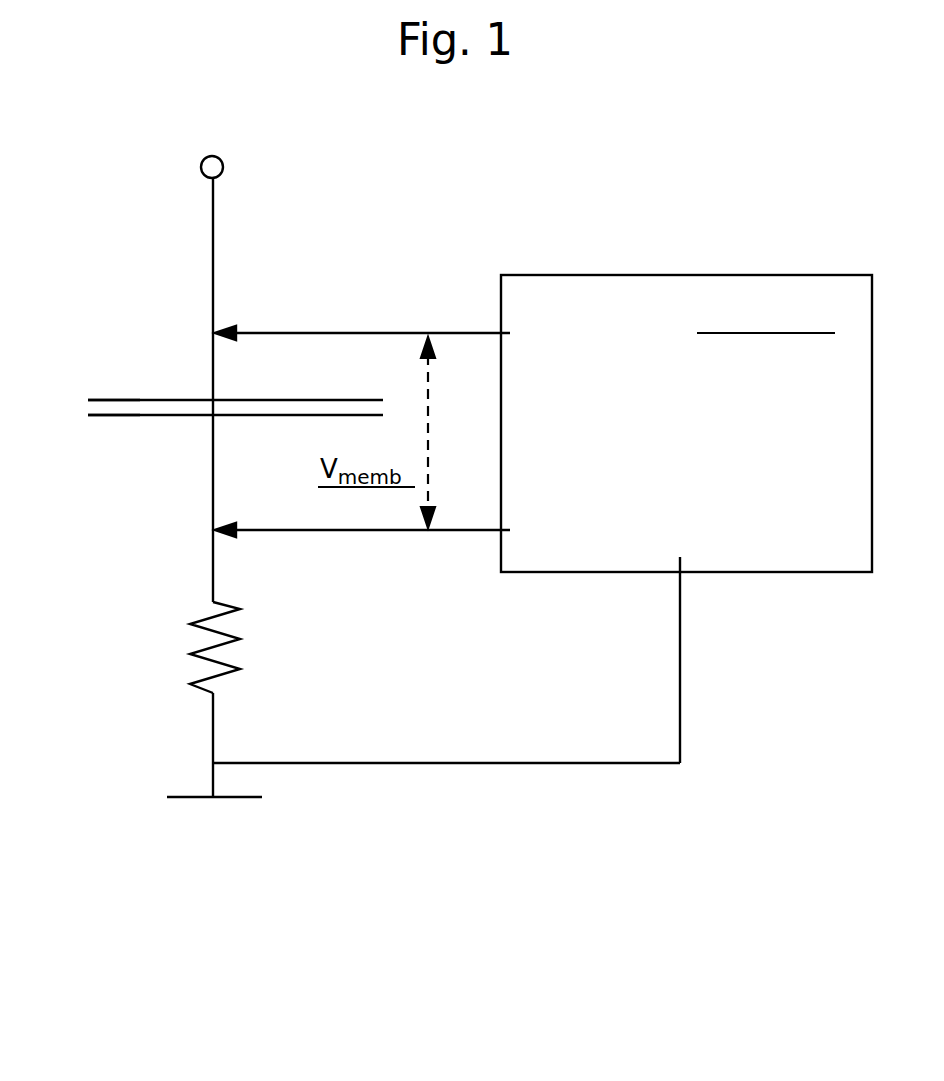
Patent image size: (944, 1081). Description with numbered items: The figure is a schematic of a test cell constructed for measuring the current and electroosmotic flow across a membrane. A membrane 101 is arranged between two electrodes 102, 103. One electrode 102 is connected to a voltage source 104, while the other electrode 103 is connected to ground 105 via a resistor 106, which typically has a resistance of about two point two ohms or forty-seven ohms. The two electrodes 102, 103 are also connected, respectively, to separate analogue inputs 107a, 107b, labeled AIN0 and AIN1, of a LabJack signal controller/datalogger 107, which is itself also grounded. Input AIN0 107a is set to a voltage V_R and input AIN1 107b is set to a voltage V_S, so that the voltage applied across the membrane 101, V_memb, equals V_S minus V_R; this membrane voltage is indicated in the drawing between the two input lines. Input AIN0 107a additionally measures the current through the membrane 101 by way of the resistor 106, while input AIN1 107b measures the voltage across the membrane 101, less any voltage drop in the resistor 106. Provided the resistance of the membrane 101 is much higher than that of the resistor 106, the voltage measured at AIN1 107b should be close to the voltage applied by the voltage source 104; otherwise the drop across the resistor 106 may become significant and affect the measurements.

The membrane 101 is at (140, 407).
The electrode 102 is at (88, 387).
The electrode 103 is at (97, 430).
The voltage source 104 is at (200, 158).
The ground 105 is at (175, 845).
The resistor 106 is at (183, 648).
The LabJack signal controller/datalogger 107 is at (852, 275).
The analogue input AIN0 107a is at (495, 540).
The analogue input AIN1 107b is at (492, 323).